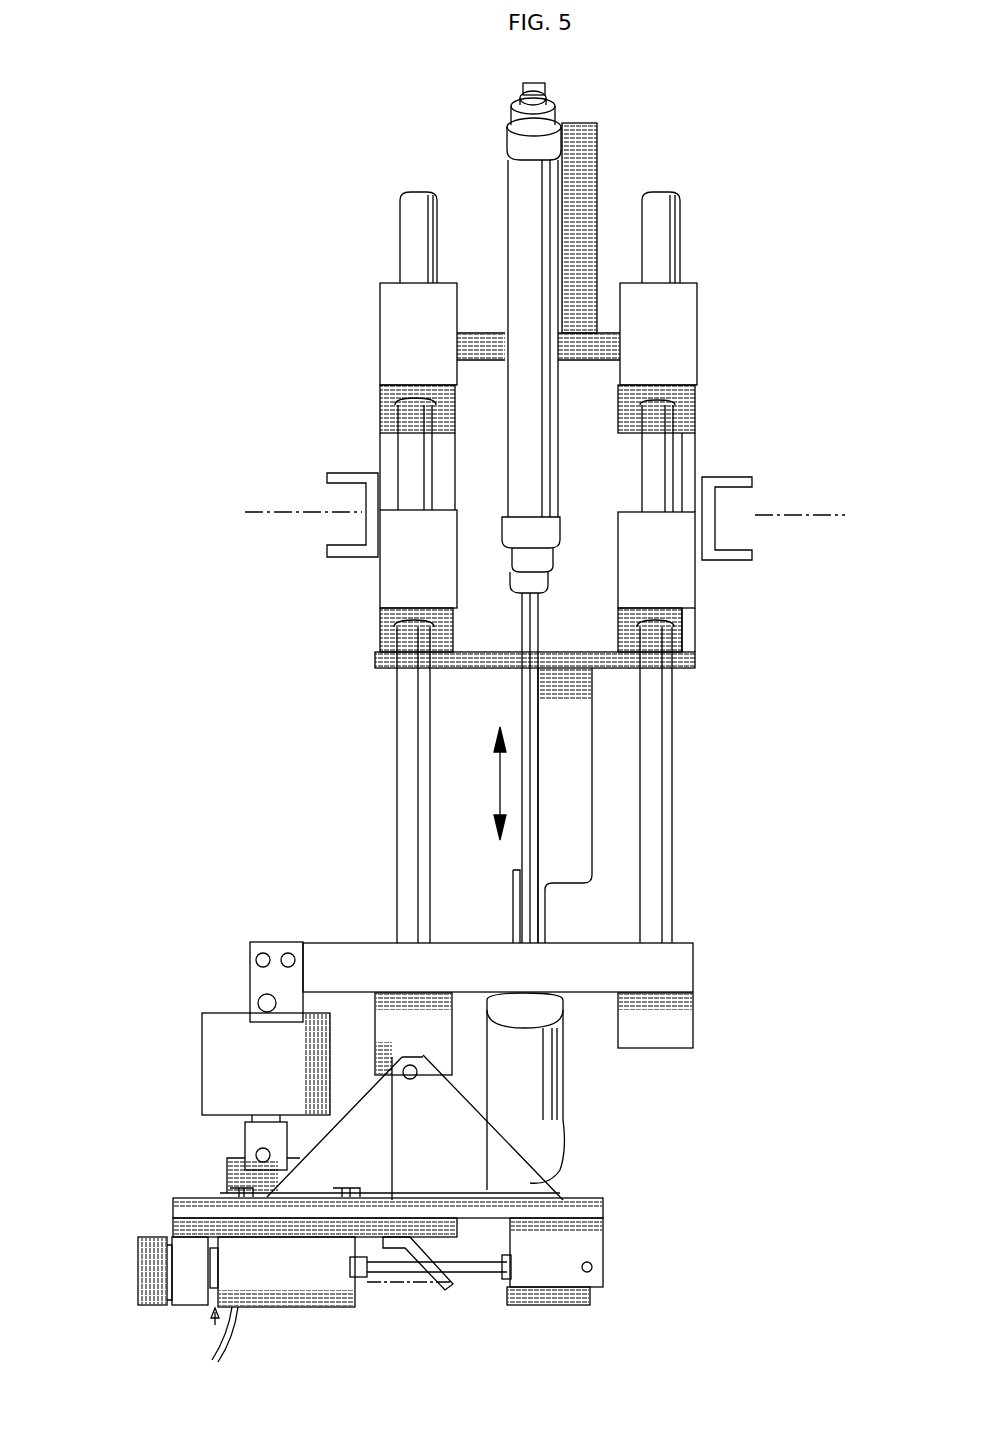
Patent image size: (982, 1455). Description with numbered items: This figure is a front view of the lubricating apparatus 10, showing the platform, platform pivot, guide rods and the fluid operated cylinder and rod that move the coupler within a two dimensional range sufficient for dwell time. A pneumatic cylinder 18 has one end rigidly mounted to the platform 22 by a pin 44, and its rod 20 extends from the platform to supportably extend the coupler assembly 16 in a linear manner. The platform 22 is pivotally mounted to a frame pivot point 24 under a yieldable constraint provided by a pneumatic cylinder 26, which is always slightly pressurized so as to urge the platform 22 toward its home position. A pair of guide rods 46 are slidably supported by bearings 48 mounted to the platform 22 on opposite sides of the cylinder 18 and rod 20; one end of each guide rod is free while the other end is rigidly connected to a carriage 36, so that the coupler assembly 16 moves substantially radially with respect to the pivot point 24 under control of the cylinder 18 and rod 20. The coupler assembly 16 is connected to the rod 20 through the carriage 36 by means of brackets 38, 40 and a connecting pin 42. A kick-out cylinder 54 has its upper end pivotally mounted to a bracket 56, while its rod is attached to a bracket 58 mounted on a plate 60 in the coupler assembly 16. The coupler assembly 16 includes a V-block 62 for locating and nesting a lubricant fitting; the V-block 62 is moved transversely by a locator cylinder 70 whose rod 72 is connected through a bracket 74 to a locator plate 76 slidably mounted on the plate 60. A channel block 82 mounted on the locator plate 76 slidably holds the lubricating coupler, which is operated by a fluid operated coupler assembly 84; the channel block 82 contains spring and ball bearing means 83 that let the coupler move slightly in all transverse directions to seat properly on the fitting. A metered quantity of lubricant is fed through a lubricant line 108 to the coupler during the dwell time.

The lubricating apparatus 10 is at (745, 112).
The coupler assembly 16 is at (115, 1126).
The pneumatic cylinder 18 is at (510, 212).
The rod 20 is at (524, 690).
The platform 22 is at (600, 142).
The frame pivot point 24 is at (268, 510).
The pneumatic cylinder 26 is at (562, 1072).
The carriage 36 is at (345, 945).
The bracket 38 is at (380, 1052).
The bracket 40 is at (380, 1120).
The connecting pin 42 is at (418, 1068).
The pin 44 is at (521, 100).
The guide rods 46 is at (408, 215).
The bearings 48 is at (392, 302).
The kick-out cylinder 54 is at (205, 1038).
The bracket 56 is at (252, 972).
The bracket 58 is at (242, 1162).
The plate 60 is at (192, 1206).
The V-block 62 is at (145, 1272).
The locator cylinder 70 is at (575, 1300).
The rod 72 is at (478, 1276).
The bracket 74 is at (440, 1260).
The locator plate 76 is at (178, 1232).
The channel block 82 is at (195, 1262).
The spring and ball bearing means 83 is at (208, 1325).
The fluid operated coupler assembly 84 is at (335, 1292).
The lubricant line 108 is at (228, 1335).